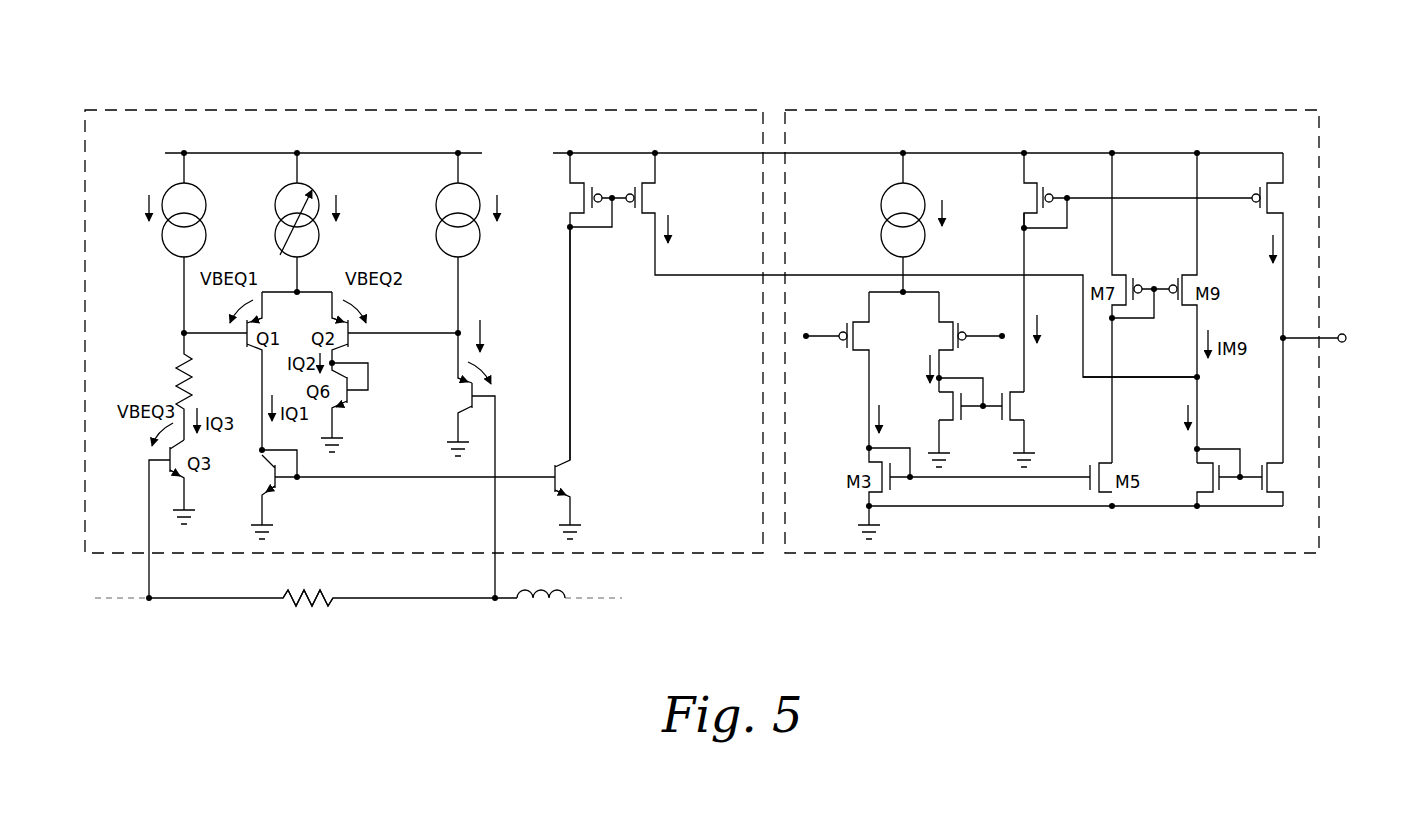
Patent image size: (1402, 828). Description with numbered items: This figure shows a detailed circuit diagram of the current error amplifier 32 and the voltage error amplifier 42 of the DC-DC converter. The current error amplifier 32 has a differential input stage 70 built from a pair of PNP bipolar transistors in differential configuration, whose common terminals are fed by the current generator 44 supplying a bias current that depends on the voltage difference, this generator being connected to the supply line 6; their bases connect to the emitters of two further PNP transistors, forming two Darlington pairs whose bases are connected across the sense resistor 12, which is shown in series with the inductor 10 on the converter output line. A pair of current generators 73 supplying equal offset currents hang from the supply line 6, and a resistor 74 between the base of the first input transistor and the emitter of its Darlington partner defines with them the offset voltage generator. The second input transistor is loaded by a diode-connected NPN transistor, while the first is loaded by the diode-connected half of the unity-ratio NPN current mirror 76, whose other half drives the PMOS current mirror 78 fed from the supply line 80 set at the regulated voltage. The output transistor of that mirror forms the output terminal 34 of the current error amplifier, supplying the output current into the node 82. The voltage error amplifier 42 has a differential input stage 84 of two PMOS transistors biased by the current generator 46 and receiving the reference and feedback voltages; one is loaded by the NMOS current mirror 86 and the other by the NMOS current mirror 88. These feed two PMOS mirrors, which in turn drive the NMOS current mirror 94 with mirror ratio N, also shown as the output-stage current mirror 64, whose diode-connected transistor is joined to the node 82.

The current error amplifier 32 is at (144, 108).
The voltage error amplifier 42 is at (1135, 106).
The supply line 6 is at (297, 153).
The current generators 73 is at (166, 190).
The current generator 44 is at (283, 192).
The resistor 74 is at (178, 372).
The differential input stage 70 is at (475, 305).
The current mirror 76 is at (298, 492).
The current mirror 78 is at (621, 240).
The supply line 80 is at (655, 153).
The inductor 10 is at (548, 597).
The sense resistor 12 is at (318, 607).
The current generator 46 is at (889, 190).
The differential input stage 84 is at (855, 385).
The current mirror 88 is at (985, 418).
The current mirror 64 is at (1242, 136).
The current mirror 86 is at (1017, 485).
The node 82 is at (1198, 377).
The current mirror 94 is at (1248, 461).
The output terminal of the current error amplifier 34 is at (1342, 333).